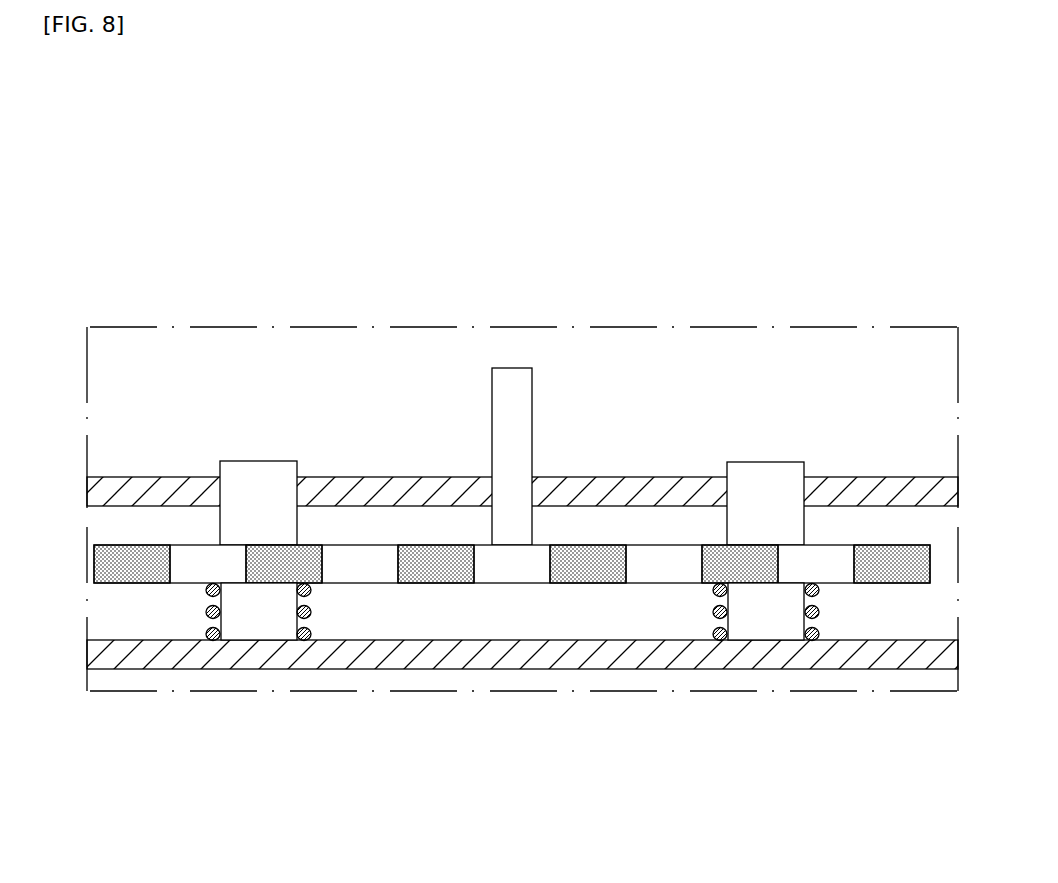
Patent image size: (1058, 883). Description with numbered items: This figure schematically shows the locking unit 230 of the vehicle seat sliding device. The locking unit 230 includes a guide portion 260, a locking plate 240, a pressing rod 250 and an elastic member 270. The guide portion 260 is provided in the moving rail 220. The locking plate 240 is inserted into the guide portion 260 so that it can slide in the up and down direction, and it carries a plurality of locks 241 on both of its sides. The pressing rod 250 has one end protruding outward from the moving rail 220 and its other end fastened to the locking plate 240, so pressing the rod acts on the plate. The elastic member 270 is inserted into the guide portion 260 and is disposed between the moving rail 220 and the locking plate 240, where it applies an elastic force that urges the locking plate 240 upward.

The moving rail 220 is at (149, 653).
The locking unit 230 is at (152, 267).
The locking plate 240 is at (523, 570).
The locks 241 is at (442, 570).
The pressing rod 250 is at (510, 383).
The guide portion 260 is at (253, 633).
The elastic member 270 is at (307, 639).